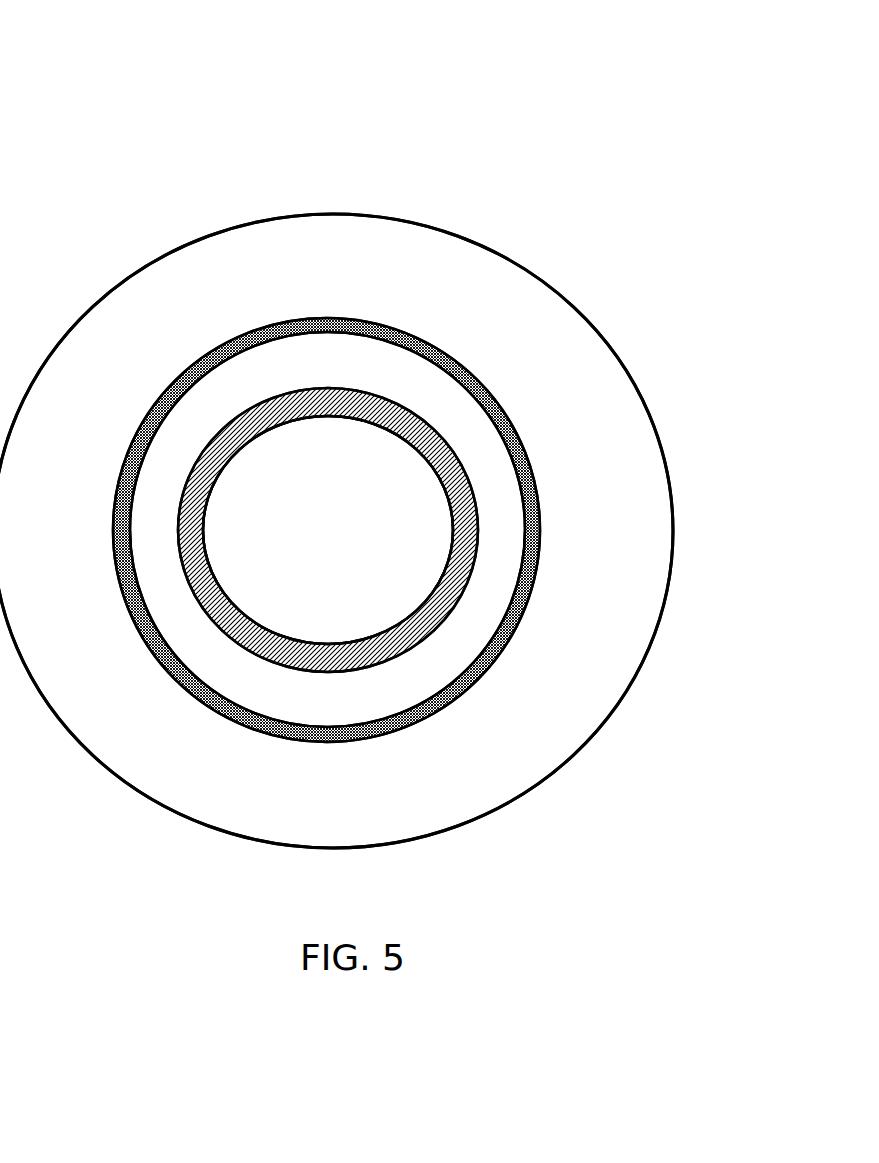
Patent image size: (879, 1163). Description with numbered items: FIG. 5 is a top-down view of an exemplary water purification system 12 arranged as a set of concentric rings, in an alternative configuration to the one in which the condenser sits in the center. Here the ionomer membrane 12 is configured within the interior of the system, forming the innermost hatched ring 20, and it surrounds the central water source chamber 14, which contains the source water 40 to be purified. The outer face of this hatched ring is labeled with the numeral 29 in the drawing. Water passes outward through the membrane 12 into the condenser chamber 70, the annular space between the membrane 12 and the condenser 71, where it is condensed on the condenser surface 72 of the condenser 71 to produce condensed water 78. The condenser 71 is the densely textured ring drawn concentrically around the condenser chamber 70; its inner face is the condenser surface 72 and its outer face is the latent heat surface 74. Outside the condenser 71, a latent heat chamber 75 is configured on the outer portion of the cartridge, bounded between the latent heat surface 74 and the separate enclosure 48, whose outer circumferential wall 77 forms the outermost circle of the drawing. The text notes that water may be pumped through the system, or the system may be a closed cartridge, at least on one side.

The ionomer membrane 12 is at (217, 110).
The water source chamber 14 is at (327, 575).
The inner ring (hatched) 20 is at (432, 467).
The outer surface of inner ring 29 is at (451, 444).
The source water 40 is at (315, 519).
The enclosure 48 is at (660, 431).
The condenser chamber 70 is at (323, 375).
The condenser 71 is at (427, 340).
The condenser surface 72 is at (519, 486).
The latent heat surface 74 is at (541, 474).
The latent heat chamber 75 is at (323, 269).
The outer circumferential wall 77 is at (563, 293).
The condensed water 78 is at (486, 472).